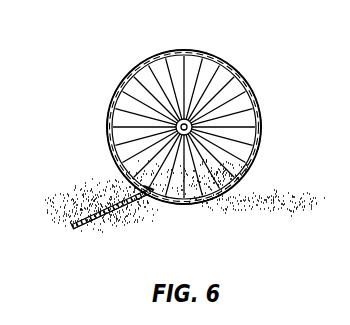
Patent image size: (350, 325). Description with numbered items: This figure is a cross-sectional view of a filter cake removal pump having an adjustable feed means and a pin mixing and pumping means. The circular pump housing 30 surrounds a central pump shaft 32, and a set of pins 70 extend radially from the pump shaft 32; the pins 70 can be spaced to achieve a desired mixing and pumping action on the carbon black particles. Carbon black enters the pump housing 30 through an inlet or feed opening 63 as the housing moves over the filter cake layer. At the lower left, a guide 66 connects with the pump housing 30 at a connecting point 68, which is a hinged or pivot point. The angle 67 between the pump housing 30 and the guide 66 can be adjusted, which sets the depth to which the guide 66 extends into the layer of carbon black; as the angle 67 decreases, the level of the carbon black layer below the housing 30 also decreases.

The pump housing 30 is at (188, 205).
The pump shaft 32 is at (244, 78).
The pins 70 is at (243, 130).
The inlet or feed opening 63 is at (88, 147).
The guide 66 is at (108, 222).
The angle 67 is at (128, 211).
The connecting point 68 is at (147, 184).